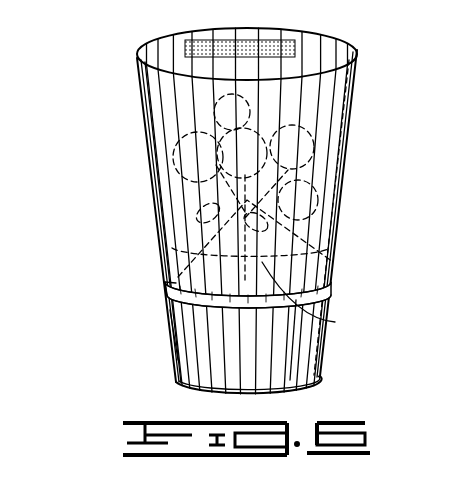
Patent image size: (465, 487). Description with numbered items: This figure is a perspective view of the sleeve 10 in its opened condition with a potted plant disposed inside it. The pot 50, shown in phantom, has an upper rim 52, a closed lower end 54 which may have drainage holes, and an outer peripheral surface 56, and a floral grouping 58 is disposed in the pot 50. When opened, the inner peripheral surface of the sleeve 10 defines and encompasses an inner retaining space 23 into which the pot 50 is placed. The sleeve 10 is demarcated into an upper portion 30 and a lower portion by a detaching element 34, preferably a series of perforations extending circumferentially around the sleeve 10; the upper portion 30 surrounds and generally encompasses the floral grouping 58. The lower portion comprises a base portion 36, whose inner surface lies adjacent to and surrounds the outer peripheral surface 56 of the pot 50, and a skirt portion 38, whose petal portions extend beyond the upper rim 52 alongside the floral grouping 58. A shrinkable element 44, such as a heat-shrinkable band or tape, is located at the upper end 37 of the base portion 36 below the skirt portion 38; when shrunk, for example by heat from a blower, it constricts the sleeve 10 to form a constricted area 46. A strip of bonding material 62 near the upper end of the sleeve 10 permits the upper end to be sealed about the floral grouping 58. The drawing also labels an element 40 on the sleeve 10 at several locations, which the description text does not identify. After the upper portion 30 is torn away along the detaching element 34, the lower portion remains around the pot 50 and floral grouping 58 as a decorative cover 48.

The sleeve 10 is at (227, 206).
The inner retaining space 23 is at (317, 62).
The upper portion 30 is at (140, 100).
The detaching element 34 is at (333, 243).
The base portion 36 is at (248, 304).
The upper end of the base portion 37 is at (333, 298).
The skirt portion 38 is at (335, 322).
The staves 40 is at (203, 30).
The shrinkable element 44 is at (165, 283).
The constricted area 46 is at (331, 283).
The decorative cover 48 is at (156, 303).
The pot 50 is at (172, 351).
The upper rim 52 is at (332, 268).
The lower end 54 is at (305, 388).
The outer peripheral surface 56 is at (318, 352).
The floral grouping 58 is at (318, 155).
The strip of bonding material 62 is at (257, 42).